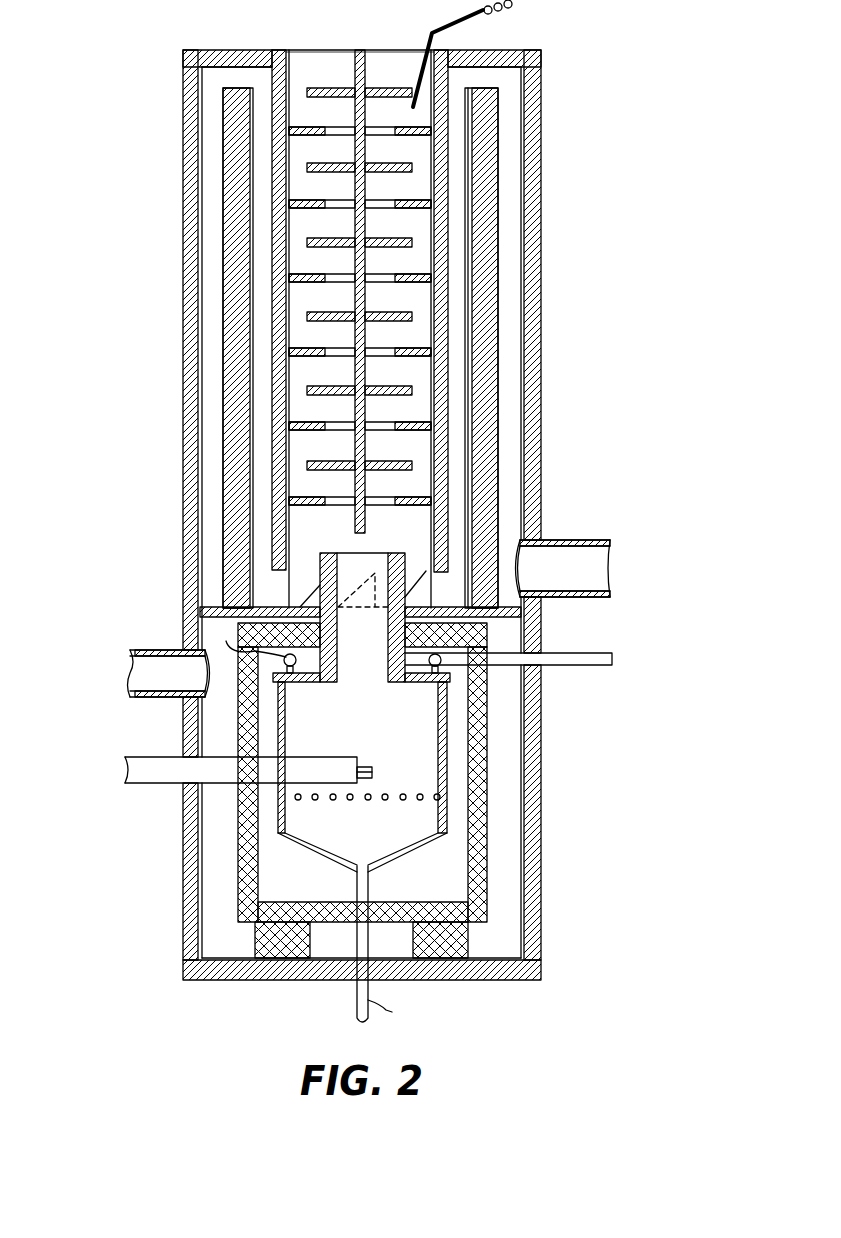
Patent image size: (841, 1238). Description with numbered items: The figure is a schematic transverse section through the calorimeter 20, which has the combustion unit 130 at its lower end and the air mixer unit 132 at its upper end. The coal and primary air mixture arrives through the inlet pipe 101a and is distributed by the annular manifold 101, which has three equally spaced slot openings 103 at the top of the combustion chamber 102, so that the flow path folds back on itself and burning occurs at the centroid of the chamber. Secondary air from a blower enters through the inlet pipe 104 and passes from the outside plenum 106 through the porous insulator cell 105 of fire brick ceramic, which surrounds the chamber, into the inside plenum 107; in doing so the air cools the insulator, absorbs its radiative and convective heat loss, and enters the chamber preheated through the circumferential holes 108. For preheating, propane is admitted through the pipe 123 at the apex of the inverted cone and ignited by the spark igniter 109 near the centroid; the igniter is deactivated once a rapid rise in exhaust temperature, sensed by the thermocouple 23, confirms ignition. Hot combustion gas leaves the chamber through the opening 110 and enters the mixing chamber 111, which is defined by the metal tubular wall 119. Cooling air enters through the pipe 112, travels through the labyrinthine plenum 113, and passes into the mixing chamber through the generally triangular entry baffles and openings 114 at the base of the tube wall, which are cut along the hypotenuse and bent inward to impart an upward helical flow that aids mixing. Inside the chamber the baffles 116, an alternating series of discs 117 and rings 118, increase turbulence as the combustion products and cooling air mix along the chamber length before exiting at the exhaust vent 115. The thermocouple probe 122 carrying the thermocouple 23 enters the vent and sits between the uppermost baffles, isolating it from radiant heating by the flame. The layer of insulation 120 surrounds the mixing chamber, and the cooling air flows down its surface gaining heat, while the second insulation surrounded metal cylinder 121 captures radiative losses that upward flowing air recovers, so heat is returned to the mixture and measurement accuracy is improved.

The calorimeter 20 is at (582, 322).
The thermocouple 23 is at (417, 74).
The annular manifold 101 is at (347, 639).
The inlet pipe 101a is at (578, 660).
The combustion chamber 102 is at (408, 827).
The slot openings 103 is at (292, 670).
The inlet pipe 104 is at (148, 672).
The porous insulator cell 105 is at (254, 886).
The outside plenum 106 is at (510, 750).
The inside plenum 107 is at (452, 882).
The circumferential holes 108 is at (335, 801).
The spark igniter 109 is at (357, 762).
The opening 110 is at (377, 658).
The mixing chamber 111 is at (418, 445).
The pipe 112 is at (566, 560).
The labyrinthine plenum 113 is at (455, 178).
The entry baffles and openings 114 is at (312, 598).
The exhaust vent 115 is at (310, 50).
The baffles 116 is at (356, 114).
The discs 117 is at (343, 466).
The rings 118 is at (305, 423).
The metal tubular wall 119 is at (286, 177).
The layer of insulation 120 is at (280, 216).
The insulation surrounded metal cylinder 121 is at (240, 290).
The thermocouple probe 122 is at (436, 26).
The pipe 123 is at (350, 998).
The combustion unit 130 is at (545, 945).
The air mixer unit 132 is at (185, 402).